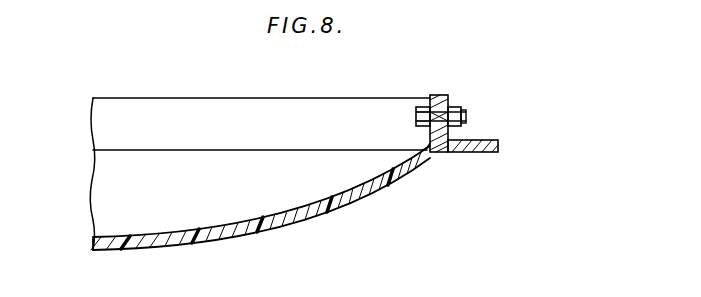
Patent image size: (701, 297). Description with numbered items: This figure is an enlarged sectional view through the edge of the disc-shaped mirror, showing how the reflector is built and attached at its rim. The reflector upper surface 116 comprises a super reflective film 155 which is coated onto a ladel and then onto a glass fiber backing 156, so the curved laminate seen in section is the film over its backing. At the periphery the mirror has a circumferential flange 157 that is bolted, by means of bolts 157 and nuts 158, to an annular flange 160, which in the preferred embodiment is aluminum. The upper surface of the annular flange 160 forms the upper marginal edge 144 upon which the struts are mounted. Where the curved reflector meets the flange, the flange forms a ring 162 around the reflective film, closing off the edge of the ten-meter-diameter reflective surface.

The reflector upper surface 116 is at (133, 237).
The upper marginal edge 144 is at (499, 141).
The super reflective film 155 is at (255, 222).
The glass fiber backing 156 is at (365, 167).
The circumferential flange / bolts 157 is at (438, 97).
The nuts 158 is at (417, 113).
The annular flange 160 is at (450, 136).
The ring 162 is at (428, 148).